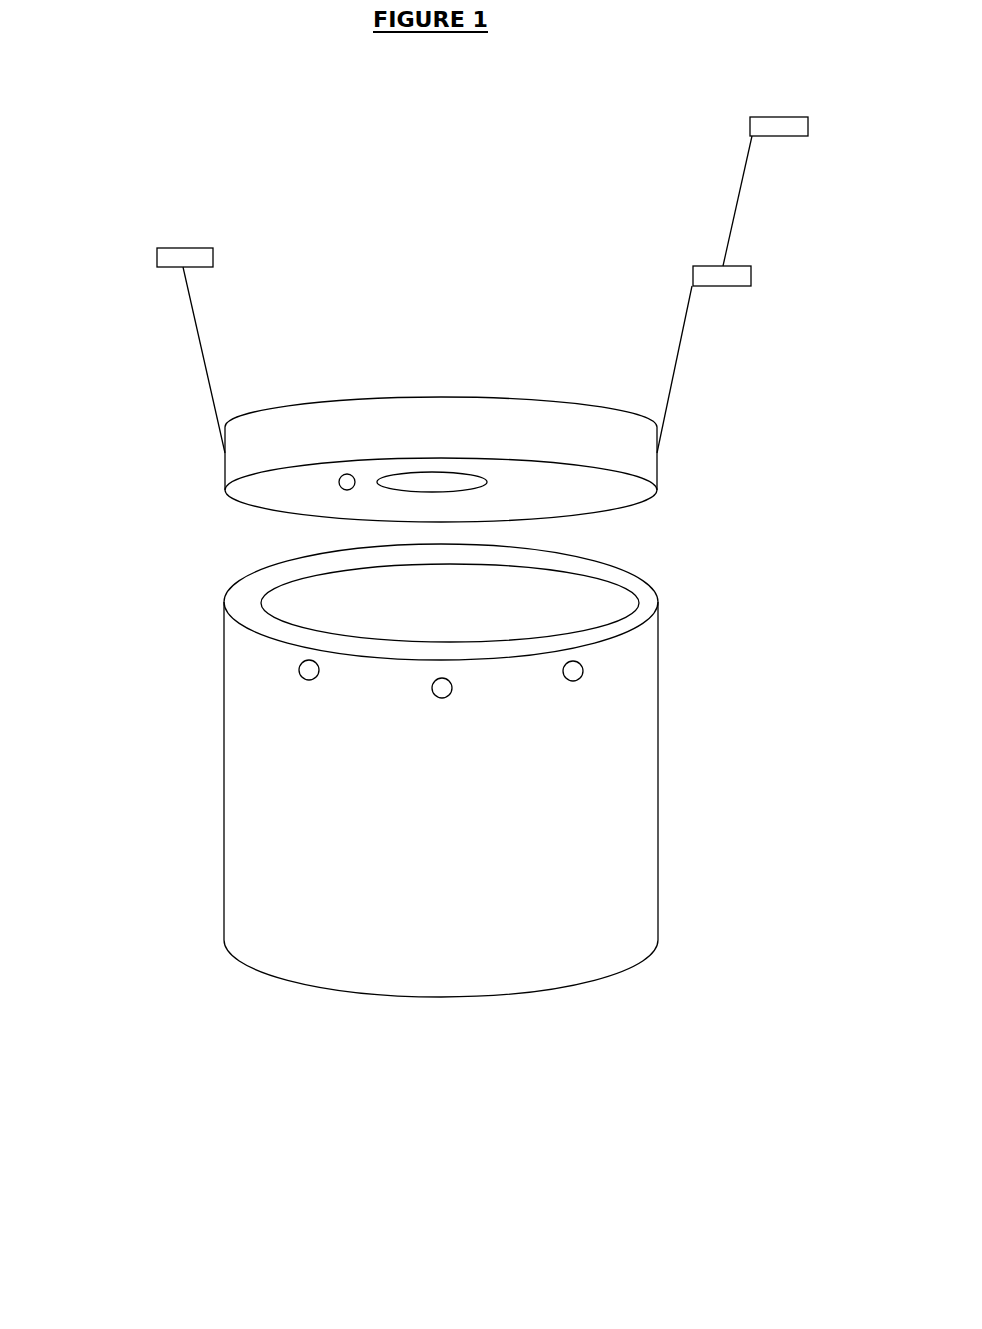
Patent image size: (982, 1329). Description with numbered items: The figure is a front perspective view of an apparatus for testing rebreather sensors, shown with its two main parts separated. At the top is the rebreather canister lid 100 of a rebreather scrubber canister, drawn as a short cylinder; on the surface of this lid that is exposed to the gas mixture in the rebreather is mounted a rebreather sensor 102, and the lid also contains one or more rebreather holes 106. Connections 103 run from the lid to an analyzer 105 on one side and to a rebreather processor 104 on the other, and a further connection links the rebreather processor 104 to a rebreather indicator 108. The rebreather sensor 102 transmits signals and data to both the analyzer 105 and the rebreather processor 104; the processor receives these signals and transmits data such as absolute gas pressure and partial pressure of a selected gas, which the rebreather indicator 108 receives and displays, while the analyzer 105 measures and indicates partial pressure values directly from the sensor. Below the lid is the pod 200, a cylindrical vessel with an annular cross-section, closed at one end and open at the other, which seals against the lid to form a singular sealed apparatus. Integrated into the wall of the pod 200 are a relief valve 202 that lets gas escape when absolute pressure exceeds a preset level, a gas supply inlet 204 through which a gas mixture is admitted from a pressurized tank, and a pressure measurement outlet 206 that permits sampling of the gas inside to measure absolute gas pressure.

The rebreather canister lid 100 is at (488, 403).
The rebreather sensor 102 is at (325, 478).
The connections 103 is at (218, 352).
The rebreather processor 104 is at (713, 301).
The analyzer 105 is at (162, 237).
The rebreather holes 106 is at (424, 476).
The rebreather indicator 108 is at (782, 150).
The pod 200 is at (330, 916).
The relief valve 202 is at (287, 680).
The gas supply inlet 204 is at (449, 701).
The pressure measurement outlet 206 is at (587, 681).